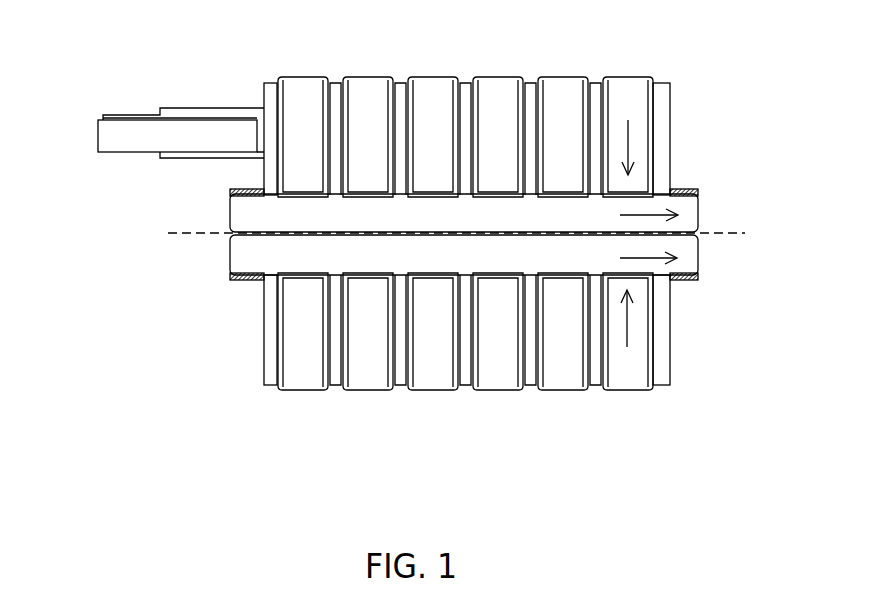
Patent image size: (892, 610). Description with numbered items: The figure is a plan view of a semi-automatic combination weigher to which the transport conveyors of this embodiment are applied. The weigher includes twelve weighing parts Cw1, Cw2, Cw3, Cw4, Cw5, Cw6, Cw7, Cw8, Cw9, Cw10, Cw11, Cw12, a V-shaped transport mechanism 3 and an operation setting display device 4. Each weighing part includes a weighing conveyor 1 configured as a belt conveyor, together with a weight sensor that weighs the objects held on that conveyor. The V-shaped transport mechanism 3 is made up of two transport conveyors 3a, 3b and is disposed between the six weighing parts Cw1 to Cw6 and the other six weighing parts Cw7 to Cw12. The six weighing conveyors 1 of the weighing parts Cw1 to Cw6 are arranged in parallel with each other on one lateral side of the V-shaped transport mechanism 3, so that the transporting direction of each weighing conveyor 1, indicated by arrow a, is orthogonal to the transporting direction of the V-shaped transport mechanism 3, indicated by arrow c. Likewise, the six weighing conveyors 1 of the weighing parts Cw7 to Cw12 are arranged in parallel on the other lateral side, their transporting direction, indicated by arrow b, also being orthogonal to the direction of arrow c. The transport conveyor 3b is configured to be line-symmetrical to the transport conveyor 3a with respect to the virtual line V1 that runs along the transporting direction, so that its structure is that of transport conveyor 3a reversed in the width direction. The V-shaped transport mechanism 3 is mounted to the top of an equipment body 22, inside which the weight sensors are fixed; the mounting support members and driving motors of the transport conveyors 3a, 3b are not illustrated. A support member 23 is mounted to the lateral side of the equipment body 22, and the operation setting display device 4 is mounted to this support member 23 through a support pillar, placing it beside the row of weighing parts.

The weighing conveyor 1 is at (645, 103).
The equipment body 22 is at (670, 176).
The support member 23 is at (210, 108).
The operation setting display device 4 is at (128, 127).
The V-shaped transport mechanism 3 is at (538, 211).
The transport conveyor 3a is at (698, 210).
The transport conveyor 3b is at (700, 253).
The arrow indicating transporting direction of the V-shaped transport mechanism c is at (675, 190).
The arrow indicating transporting direction of weighing conveyors of weighing parts a is at (632, 148).
The arrow indicating transporting direction of weighing conveyors of weighing parts b is at (627, 318).
The virtual line V1 is at (206, 233).
The weighing part Cw1 is at (628, 77).
The weighing part Cw2 is at (563, 77).
The weighing part Cw3 is at (498, 77).
The weighing part Cw4 is at (433, 77).
The weighing part Cw5 is at (368, 77).
The weighing part Cw6 is at (303, 77).
The weighing part Cw7 is at (628, 390).
The weighing part Cw8 is at (563, 390).
The weighing part Cw9 is at (498, 390).
The weighing part Cw10 is at (433, 390).
The weighing part Cw11 is at (368, 390).
The weighing part Cw12 is at (303, 390).